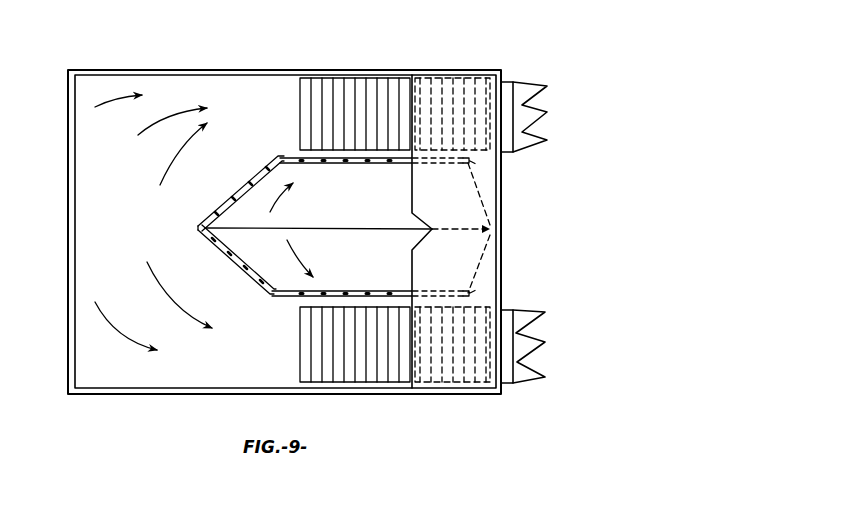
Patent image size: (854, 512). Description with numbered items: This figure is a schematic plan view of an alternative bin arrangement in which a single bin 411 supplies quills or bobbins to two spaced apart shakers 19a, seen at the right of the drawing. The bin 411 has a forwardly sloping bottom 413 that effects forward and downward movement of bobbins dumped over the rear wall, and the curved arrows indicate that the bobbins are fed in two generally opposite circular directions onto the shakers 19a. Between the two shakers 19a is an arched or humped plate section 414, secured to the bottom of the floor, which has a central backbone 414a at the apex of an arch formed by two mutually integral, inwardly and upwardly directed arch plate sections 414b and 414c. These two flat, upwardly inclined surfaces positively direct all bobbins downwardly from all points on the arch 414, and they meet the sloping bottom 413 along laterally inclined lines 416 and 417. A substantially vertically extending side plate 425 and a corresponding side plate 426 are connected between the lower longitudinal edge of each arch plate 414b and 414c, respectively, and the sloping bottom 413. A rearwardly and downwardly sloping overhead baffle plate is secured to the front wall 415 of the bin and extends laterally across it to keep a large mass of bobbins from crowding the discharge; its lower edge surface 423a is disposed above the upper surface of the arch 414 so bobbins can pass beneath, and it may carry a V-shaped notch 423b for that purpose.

The bin 411 is at (182, 60).
The forwardly sloping bottom 413 is at (150, 320).
The arched plate section 414 is at (373, 259).
The central backbone 414a is at (314, 230).
The arch plate section 414b is at (225, 207).
The arch plate section 414c is at (261, 284).
The front wall 415 is at (502, 224).
The laterally inclined line 416 is at (267, 169).
The laterally inclined line 417 is at (232, 262).
The lower edge surface 423a is at (414, 267).
The V-shaped notch 423b is at (414, 217).
The side plate 425 is at (345, 165).
The side plate 426 is at (360, 290).
The shaker 19a is at (507, 84).